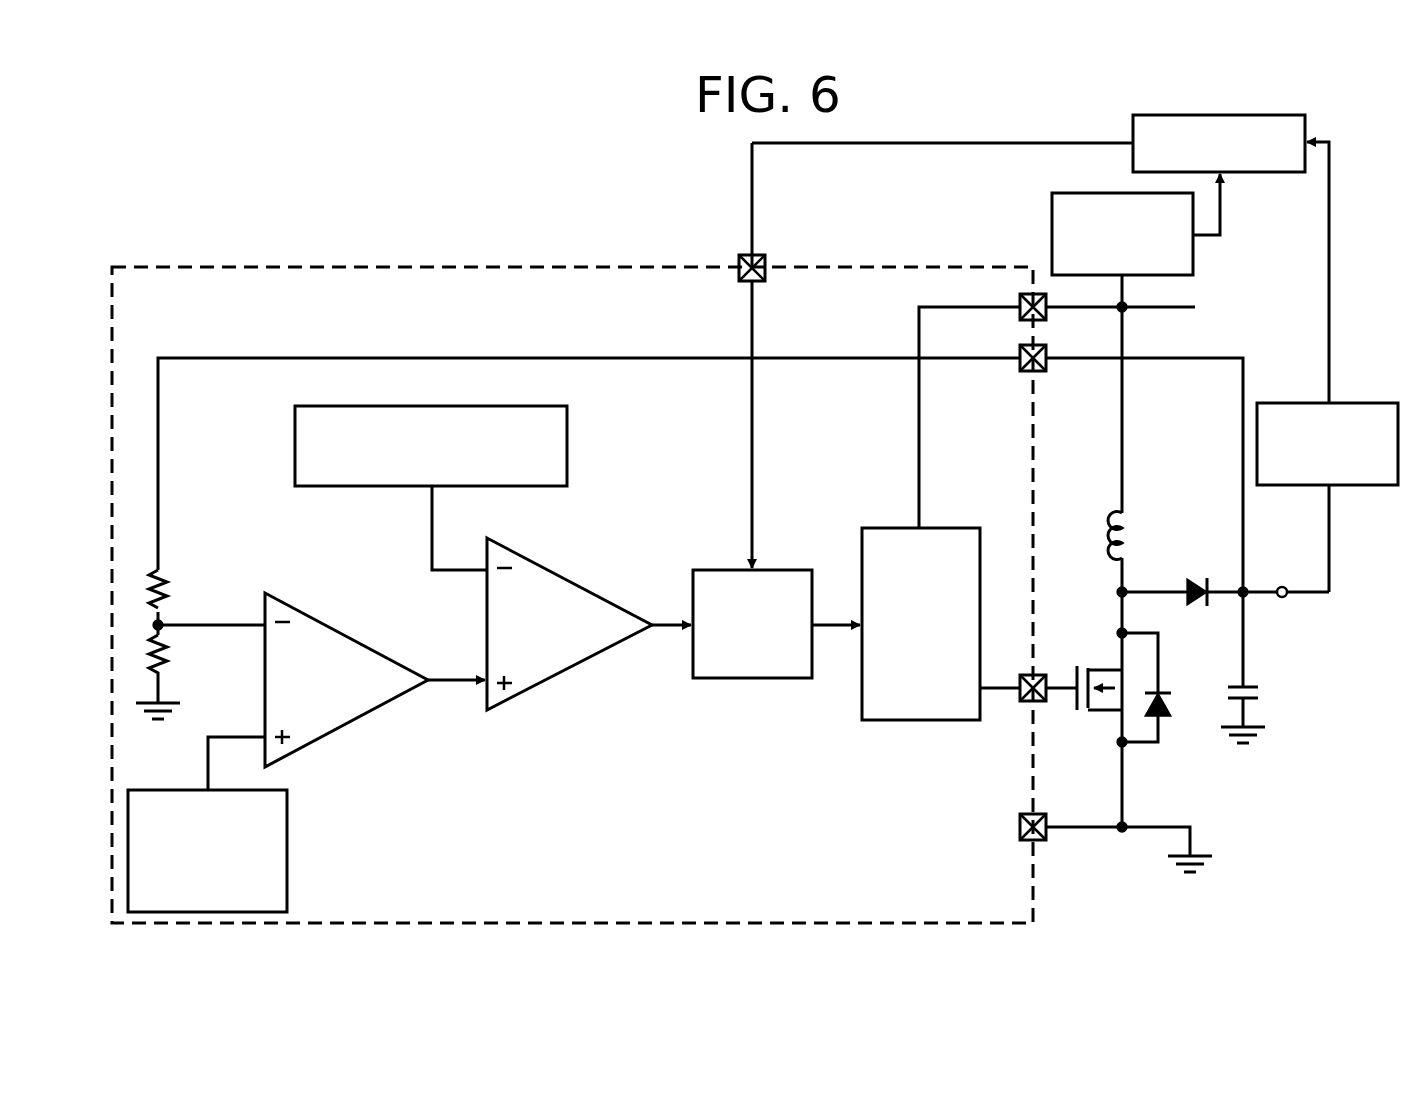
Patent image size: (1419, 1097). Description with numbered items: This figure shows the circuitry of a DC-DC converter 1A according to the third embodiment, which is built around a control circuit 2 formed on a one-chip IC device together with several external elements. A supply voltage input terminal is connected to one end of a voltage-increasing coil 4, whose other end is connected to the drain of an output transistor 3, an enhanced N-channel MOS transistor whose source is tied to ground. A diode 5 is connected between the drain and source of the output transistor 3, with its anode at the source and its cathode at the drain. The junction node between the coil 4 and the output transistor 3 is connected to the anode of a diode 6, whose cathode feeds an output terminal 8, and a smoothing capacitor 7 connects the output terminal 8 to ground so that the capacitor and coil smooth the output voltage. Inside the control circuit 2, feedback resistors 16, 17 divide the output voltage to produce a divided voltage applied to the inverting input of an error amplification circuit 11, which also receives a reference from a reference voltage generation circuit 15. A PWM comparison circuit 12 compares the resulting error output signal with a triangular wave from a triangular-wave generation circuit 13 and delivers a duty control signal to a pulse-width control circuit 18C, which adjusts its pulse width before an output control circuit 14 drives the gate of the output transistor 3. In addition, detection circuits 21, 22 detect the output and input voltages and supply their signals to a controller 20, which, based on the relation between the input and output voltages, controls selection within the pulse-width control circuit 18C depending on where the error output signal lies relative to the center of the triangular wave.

The DC-DC converter 1A is at (318, 158).
The control circuit 2 is at (940, 267).
The output transistor 3 is at (1072, 680).
The coil 4 is at (1128, 526).
The diode 5 is at (1160, 722).
The diode 6 is at (1192, 580).
The smoothing capacitor 7 is at (1228, 688).
The output terminal 8 is at (1282, 600).
The error amplification circuit 11 is at (336, 640).
The PWM comparison circuit 12 is at (562, 582).
The triangular-wave generation circuit 13 is at (505, 406).
The output control circuit 14 is at (940, 528).
The reference voltage generation circuit 15 is at (160, 790).
The feedback resistor 16 is at (172, 588).
The feedback resistor 17 is at (170, 656).
The pulse-width control circuit 18C is at (762, 570).
The controller 20 is at (1265, 115).
The detection circuit 21 is at (1360, 404).
The detection circuit 22 is at (1082, 193).